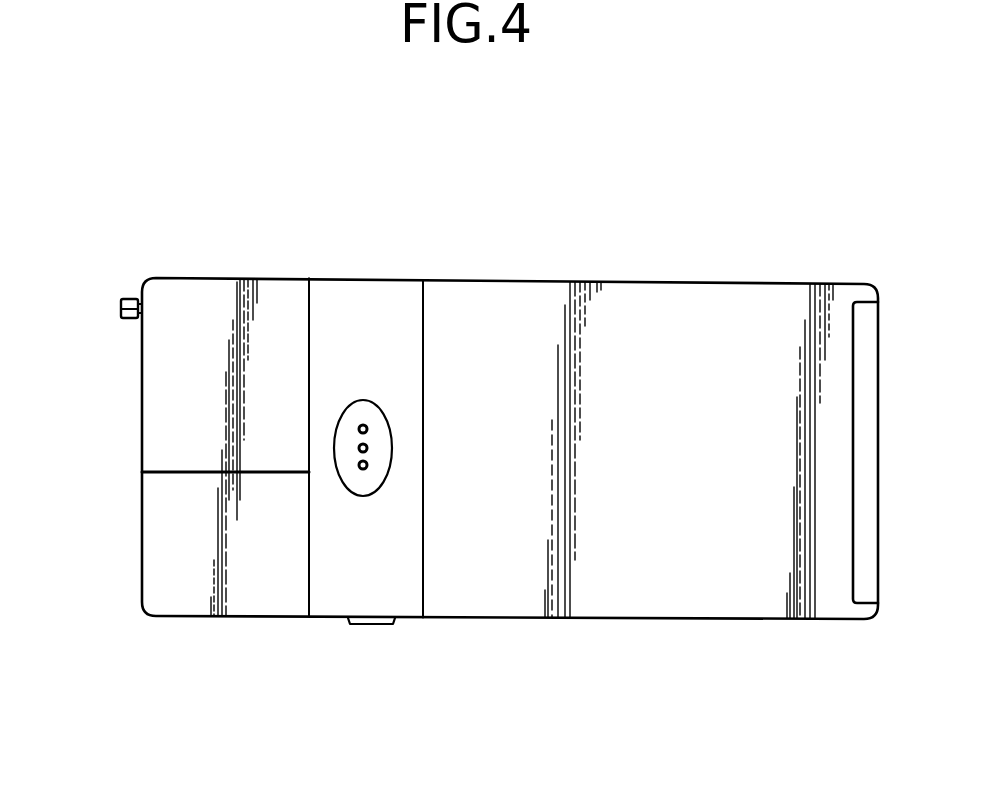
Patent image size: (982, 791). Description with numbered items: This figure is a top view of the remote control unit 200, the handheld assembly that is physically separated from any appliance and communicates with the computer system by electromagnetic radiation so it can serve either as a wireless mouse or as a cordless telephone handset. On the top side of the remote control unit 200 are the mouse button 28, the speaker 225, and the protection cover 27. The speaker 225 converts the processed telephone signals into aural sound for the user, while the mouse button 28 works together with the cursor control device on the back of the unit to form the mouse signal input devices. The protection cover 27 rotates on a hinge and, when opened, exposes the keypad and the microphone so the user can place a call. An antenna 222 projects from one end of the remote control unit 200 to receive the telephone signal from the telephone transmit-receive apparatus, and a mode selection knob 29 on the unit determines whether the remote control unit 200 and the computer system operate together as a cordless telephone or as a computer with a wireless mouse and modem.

The remote control unit 200 is at (651, 173).
The protection cover 27 is at (673, 333).
The mouse button 28 is at (173, 520).
The antenna 222 is at (120, 298).
The speaker 225 is at (363, 424).
The mode selection knob 29 is at (377, 624).